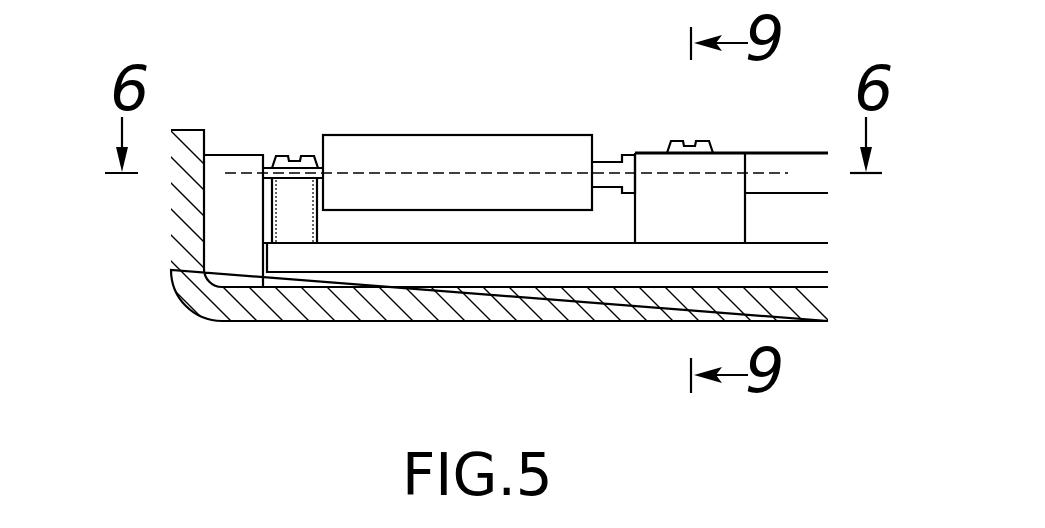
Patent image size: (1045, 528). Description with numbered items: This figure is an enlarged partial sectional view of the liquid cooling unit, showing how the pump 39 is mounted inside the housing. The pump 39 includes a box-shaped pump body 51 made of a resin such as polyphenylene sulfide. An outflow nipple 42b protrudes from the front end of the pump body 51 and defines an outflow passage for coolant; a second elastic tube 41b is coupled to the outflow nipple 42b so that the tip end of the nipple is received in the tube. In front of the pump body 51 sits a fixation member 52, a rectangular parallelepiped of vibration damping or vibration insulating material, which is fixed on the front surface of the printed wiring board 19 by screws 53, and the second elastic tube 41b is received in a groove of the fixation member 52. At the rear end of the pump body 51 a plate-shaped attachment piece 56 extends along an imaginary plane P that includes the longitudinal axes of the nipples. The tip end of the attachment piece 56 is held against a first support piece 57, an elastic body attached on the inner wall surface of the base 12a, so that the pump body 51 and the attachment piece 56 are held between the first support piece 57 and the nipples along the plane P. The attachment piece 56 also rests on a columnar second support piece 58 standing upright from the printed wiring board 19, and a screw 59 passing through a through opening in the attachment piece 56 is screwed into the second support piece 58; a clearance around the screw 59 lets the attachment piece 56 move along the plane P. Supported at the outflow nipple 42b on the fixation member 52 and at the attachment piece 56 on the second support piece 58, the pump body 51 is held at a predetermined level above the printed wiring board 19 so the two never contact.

The base 12a is at (267, 321).
The printed wiring board 19 is at (443, 272).
The first support piece 57 is at (225, 155).
The attachment piece 56 is at (277, 162).
The screw 59 is at (300, 157).
The second support piece 58 is at (287, 221).
The imaginary plane P is at (390, 173).
The pump 39 is at (457, 120).
The pump body 51 is at (490, 135).
The outflow nipple 42b is at (603, 160).
The fixation member 52 is at (745, 218).
The second elastic tube 41b is at (768, 153).
The screws 53 is at (705, 141).